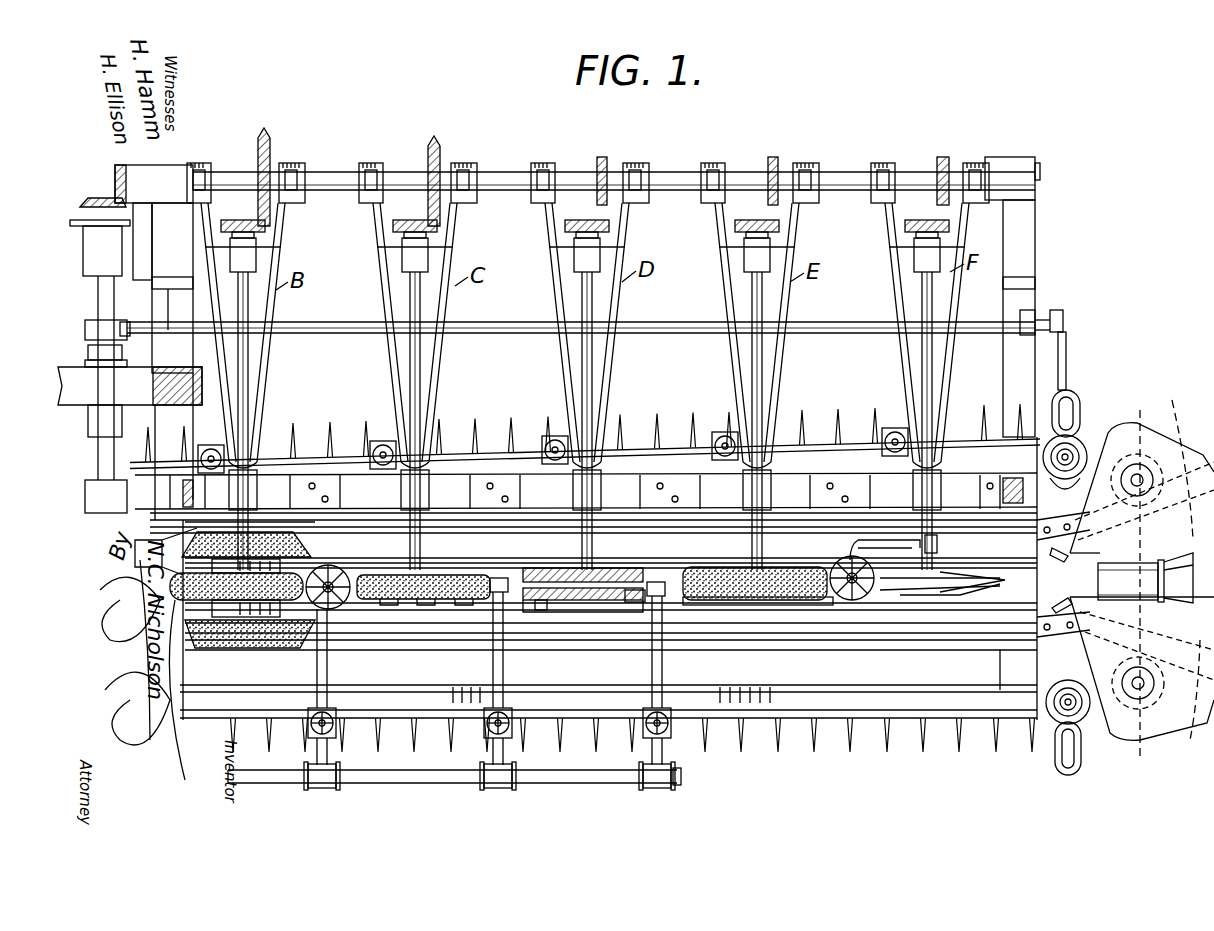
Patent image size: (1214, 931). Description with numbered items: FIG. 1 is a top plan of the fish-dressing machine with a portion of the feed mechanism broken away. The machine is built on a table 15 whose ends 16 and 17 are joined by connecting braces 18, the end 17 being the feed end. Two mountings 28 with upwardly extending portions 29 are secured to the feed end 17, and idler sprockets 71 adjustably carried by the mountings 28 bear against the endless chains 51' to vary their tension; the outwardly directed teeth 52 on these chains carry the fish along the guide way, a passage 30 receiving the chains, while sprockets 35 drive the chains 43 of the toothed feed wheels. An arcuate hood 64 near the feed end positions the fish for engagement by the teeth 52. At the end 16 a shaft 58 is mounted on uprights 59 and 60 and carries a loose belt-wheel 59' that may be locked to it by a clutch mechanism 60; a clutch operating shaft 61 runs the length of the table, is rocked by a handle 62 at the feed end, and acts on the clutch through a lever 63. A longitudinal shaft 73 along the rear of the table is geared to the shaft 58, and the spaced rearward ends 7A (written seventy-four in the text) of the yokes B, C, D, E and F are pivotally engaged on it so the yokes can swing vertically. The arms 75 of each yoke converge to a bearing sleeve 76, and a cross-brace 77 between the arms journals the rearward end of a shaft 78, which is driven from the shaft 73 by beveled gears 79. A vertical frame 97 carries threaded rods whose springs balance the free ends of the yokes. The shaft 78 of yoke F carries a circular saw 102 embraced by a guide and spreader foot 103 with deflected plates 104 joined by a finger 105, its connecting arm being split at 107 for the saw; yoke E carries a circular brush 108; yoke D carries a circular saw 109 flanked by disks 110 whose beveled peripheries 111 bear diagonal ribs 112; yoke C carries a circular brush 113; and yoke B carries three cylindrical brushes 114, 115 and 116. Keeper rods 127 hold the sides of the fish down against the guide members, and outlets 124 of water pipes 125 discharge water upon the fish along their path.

The bearing block 7A is at (202, 163).
The beveled gears 79 is at (270, 140).
The longitudinal shaft 73 is at (672, 168).
The cross-brace 77 is at (268, 254).
The shaft 78 is at (250, 312).
The arms of yokes 75 is at (262, 390).
The clutch operating shaft 61 is at (672, 333).
The handle 62 is at (1066, 360).
The upright 59 is at (94, 333).
The shaft 58 is at (90, 320).
The clutch mechanism 60 is at (120, 325).
The lever 63 is at (90, 350).
The belt-wheel 59' is at (130, 386).
The cylindrical brush 114 is at (290, 530).
The endless chain 51' is at (585, 586).
The teeth 52 is at (727, 440).
The vertical frame 97 is at (182, 492).
The bearing sleeve 76 is at (250, 503).
The end of table 16 is at (225, 668).
The cylindrical brush 115 is at (335, 562).
The cylindrical brush 116 is at (332, 655).
The circular brush 113 is at (450, 572).
The water pipes 125 is at (680, 668).
The keeper rods 127 is at (500, 575).
The circular saw 109 is at (548, 572).
The diagonal ribs 112 is at (600, 575).
The disk 110 is at (635, 575).
The beveled periphery 111 is at (548, 602).
The outlets 124 is at (690, 600).
The circular brush 108 is at (768, 602).
The circular saw 102 is at (880, 602).
The guide and spreader foot 103 is at (918, 600).
The split 107 is at (955, 600).
The finger 105 is at (1000, 590).
The deflected plates 104 is at (878, 560).
The mountings 28 is at (1030, 526).
The upwardly extending portions 29 is at (1040, 548).
The hood 64 is at (1145, 578).
The table 15 is at (806, 687).
The feed end of table 17 is at (1020, 663).
The connecting braces 18 is at (565, 698).
The idler sprockets 71 is at (1075, 438).
The sprockets 35 is at (1136, 420).
The passage 30 is at (1160, 470).
The chains 43 is at (1192, 440).